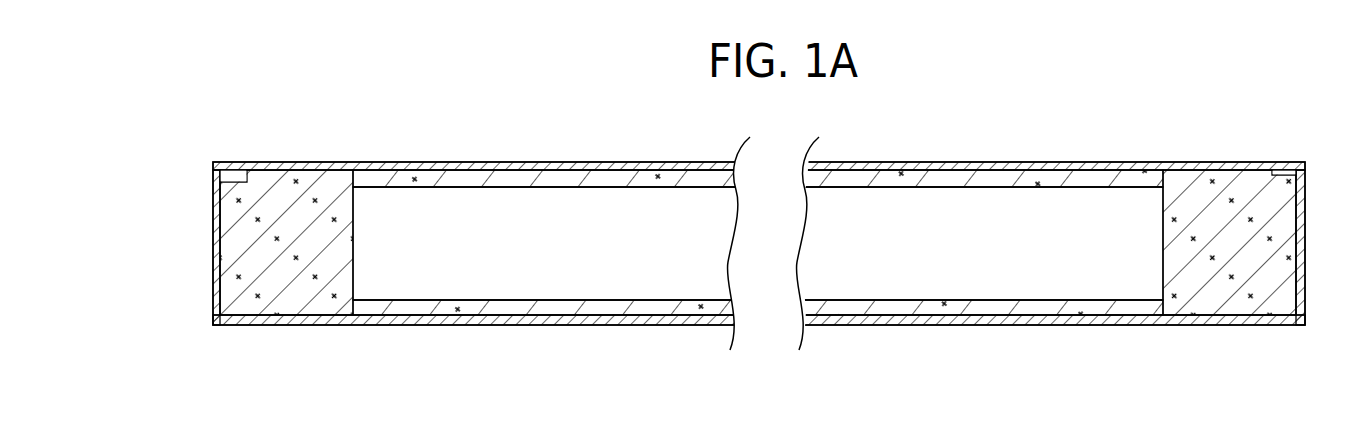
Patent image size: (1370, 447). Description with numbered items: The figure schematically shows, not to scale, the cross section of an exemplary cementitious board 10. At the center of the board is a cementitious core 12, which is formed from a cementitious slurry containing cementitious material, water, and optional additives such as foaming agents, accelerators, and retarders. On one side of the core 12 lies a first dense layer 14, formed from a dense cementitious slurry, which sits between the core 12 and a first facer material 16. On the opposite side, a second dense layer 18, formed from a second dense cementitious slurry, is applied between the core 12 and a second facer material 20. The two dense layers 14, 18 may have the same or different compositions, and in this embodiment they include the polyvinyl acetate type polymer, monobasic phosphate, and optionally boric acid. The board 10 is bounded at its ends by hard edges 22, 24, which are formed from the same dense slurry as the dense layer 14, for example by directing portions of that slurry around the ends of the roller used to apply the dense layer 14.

The cementitious board 10 is at (585, 340).
The cementitious core 12 is at (603, 247).
The first dense layer 14 is at (1025, 305).
The first facer material 16 is at (1150, 320).
The second dense layer 18 is at (916, 177).
The second facer material 20 is at (1125, 163).
The hard edge 22 is at (240, 240).
The hard edge 24 is at (1265, 252).